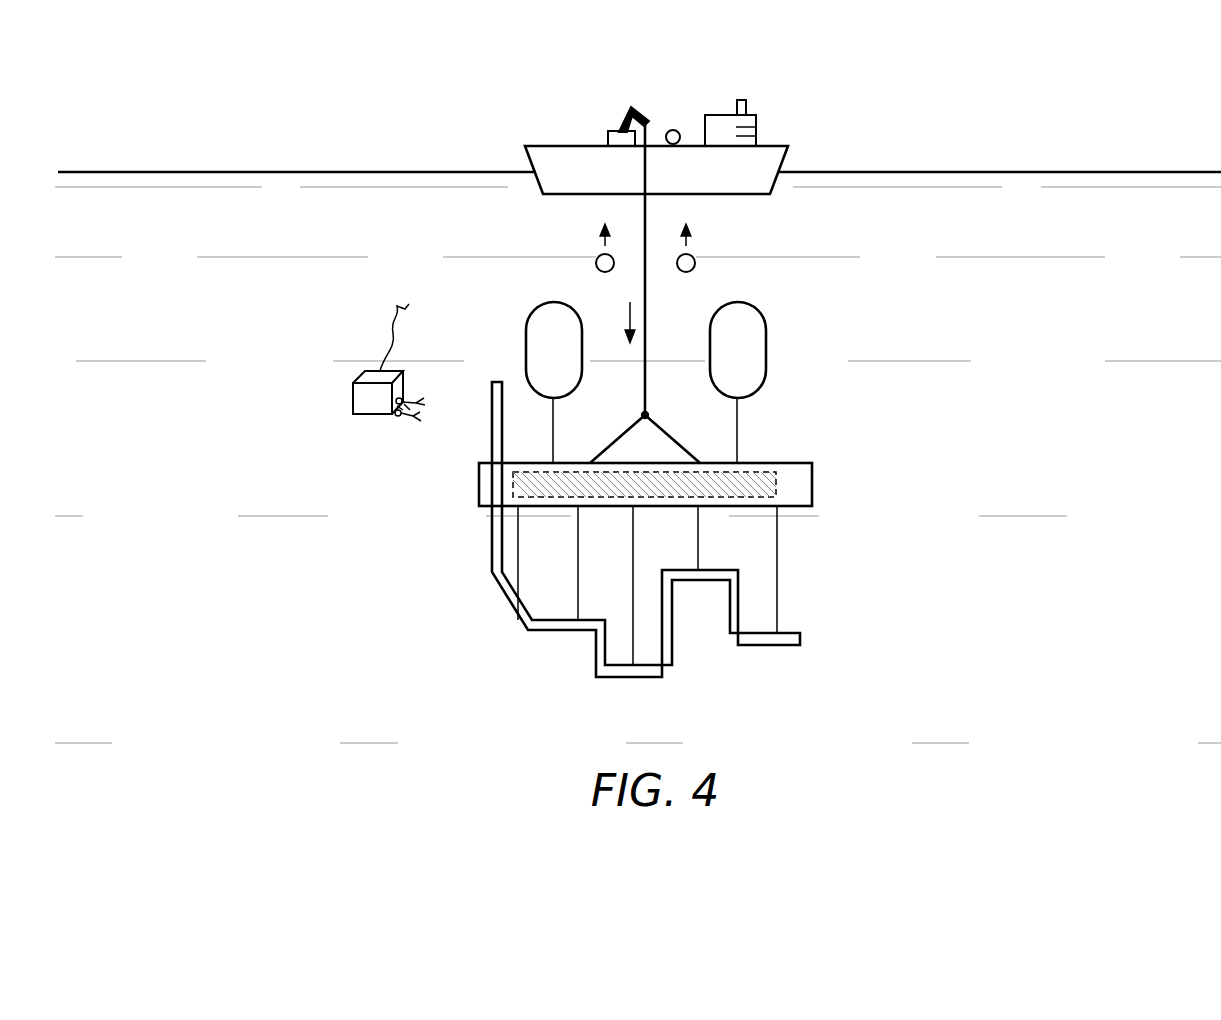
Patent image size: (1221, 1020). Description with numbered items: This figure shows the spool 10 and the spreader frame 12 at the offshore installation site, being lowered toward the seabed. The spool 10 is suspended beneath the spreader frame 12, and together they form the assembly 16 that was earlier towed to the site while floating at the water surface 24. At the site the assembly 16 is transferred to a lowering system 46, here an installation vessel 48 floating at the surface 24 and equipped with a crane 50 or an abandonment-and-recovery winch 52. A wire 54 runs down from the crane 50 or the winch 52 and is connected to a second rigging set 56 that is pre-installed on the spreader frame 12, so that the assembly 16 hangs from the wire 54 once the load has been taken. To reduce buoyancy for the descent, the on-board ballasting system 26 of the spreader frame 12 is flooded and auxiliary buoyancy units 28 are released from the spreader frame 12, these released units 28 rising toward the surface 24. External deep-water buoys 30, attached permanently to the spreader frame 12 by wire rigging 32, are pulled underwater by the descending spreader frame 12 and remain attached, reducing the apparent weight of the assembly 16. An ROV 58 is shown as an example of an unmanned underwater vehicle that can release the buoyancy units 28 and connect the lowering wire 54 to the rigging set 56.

The spool 10 is at (492, 560).
The spreader frame 12 is at (812, 481).
The assembly 16 is at (675, 536).
The surface 24 is at (168, 172).
The on-board ballasting system 26 is at (742, 500).
The auxiliary on-board buoyancy units 28 is at (596, 264).
The external deep-water buoys 30 is at (526, 320).
The wire rigging 32 is at (556, 418).
The lowering system 46 is at (681, 127).
The installation vessel 48 is at (543, 146).
The crane 50 is at (618, 122).
The abandonment-and-recovery winch 52 is at (673, 130).
The wire 54 is at (648, 297).
The second rigging set 56 is at (672, 440).
The ROV 58 is at (353, 396).